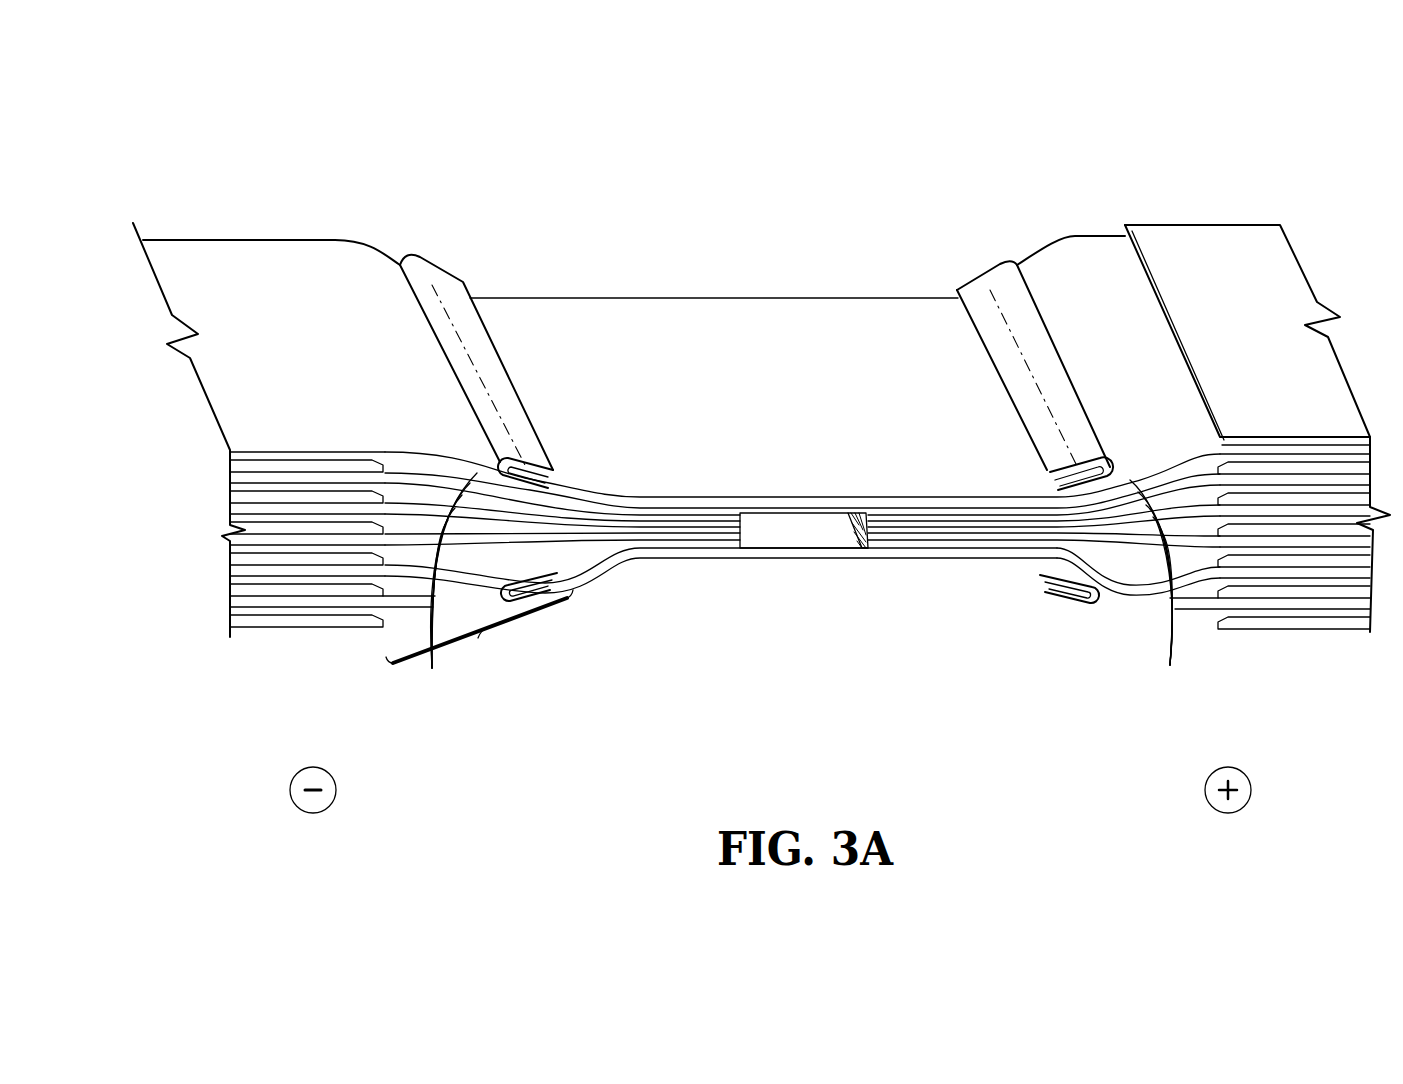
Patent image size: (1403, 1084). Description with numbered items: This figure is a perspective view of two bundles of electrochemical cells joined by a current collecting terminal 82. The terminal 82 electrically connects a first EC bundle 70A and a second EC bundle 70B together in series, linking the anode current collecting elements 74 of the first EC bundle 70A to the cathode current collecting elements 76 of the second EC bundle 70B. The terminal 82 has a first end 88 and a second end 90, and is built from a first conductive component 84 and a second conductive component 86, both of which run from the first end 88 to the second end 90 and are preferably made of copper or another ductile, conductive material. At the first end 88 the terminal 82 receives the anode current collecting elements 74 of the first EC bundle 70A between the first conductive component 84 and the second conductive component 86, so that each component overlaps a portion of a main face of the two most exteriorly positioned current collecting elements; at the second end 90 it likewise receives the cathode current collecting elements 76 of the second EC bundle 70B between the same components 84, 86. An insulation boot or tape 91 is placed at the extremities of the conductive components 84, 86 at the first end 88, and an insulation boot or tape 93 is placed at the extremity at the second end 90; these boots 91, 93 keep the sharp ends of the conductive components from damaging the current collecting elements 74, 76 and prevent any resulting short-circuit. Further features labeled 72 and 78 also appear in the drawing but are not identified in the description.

The first EC bundle 70A is at (283, 198).
The second EC bundle 70B is at (1205, 165).
The electrode plate 72 is at (360, 460).
The anode current collecting elements 74 is at (432, 668).
The cathode current collecting elements 76 is at (1170, 665).
The tab joint portion 78 is at (479, 636).
The current collecting terminal 82 is at (640, 354).
The first conductive component 84 is at (793, 563).
The second conductive component 86 is at (783, 357).
The first end 88 is at (631, 573).
The second end 90 is at (953, 573).
The insulation boot or tape 91 is at (478, 370).
The insulation boot or tape 93 is at (990, 333).